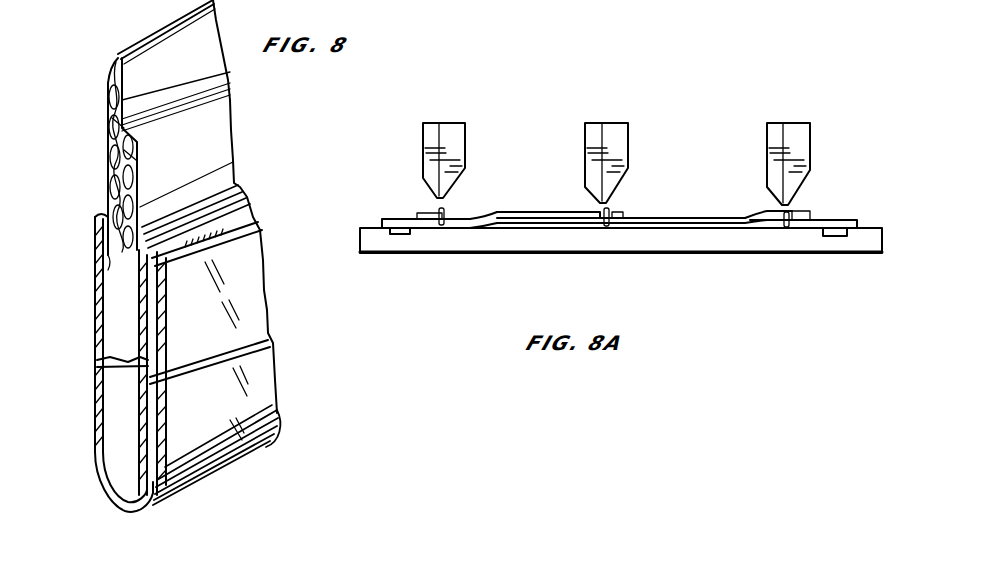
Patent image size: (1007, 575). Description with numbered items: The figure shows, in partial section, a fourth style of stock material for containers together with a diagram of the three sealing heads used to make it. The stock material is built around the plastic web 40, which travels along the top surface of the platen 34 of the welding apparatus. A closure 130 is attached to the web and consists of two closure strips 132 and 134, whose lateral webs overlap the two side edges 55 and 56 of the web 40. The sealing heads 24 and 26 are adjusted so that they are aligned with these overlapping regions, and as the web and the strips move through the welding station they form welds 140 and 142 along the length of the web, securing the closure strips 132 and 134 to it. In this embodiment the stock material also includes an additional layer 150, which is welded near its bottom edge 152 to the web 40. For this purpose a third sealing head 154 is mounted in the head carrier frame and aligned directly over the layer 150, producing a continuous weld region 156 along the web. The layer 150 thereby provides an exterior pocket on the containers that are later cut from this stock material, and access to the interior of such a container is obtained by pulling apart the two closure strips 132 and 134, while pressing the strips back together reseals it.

In FIG. 8A, the sealing head 24 is at (423, 148).
In FIG. 8A, the sealing head 26 is at (812, 138).
In FIG. 8A, the platen 34 is at (547, 242).
In FIG. 8, the web 40 is at (115, 427).
In FIG. 8A, the web 40 is at (708, 220).
In FIG. 8, the side edge 55 is at (227, 207).
In FIG. 8, the side edge 56 is at (100, 217).
In FIG. 8, the closure 130 is at (98, 163).
In FIG. 8, the closure strip 132 is at (133, 167).
In FIG. 8A, the closure strip 132 is at (397, 219).
In FIG. 8, the closure strip 134 is at (108, 133).
In FIG. 8A, the closure strip 134 is at (830, 222).
In FIG. 8, the weld 140 is at (237, 220).
In FIG. 8A, the weld 140 is at (440, 214).
In FIG. 8, the weld 142 is at (107, 270).
In FIG. 8A, the weld 142 is at (793, 213).
In FIG. 8, the additional layer 150 is at (247, 330).
In FIG. 8A, the additional layer 150 is at (547, 212).
In FIG. 8, the bottom edge 152 is at (263, 445).
In FIG. 8A, the bottom edge 152 is at (622, 215).
In FIG. 8A, the third sealing head 154 is at (630, 137).
In FIG. 8, the weld region 156 is at (267, 425).
In FIG. 8A, the weld region 156 is at (610, 212).